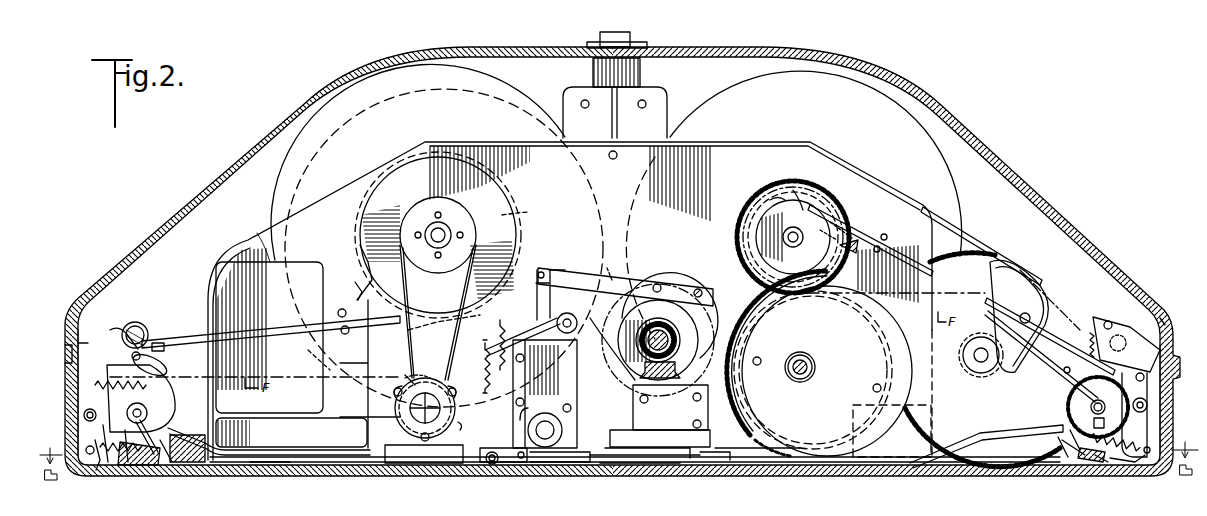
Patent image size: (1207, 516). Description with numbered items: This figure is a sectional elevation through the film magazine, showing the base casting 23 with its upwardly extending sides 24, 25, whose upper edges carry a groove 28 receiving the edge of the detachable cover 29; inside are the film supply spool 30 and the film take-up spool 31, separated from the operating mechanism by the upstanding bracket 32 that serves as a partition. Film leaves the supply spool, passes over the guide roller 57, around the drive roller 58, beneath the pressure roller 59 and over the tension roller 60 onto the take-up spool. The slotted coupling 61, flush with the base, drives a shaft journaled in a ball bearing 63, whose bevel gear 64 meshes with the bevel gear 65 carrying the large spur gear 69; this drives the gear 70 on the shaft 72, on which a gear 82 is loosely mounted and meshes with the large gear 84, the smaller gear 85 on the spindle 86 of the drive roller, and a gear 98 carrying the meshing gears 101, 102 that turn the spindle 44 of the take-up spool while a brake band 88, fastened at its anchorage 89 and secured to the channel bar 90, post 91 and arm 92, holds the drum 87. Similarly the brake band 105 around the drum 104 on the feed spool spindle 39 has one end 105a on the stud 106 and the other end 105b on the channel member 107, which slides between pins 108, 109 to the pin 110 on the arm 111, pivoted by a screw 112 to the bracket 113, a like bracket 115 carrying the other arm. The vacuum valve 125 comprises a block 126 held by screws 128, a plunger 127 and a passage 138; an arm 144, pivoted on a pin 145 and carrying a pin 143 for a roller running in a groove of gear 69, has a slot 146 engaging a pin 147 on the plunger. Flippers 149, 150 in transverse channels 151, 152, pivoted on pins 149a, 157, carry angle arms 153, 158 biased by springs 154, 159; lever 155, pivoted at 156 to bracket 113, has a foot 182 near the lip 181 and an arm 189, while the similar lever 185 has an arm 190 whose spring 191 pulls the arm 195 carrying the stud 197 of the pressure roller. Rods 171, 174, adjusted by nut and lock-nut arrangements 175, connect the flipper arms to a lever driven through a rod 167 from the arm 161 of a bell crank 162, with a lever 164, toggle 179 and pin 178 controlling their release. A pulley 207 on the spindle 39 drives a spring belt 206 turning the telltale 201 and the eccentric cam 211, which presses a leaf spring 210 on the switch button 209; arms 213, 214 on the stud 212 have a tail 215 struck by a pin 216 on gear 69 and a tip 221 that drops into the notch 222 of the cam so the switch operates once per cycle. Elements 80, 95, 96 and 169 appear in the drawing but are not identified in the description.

The base casting 23 is at (318, 465).
The side 24 is at (76, 395).
The side 25 is at (1162, 395).
The groove or slot 28 is at (66, 356).
The cover 29 is at (1015, 160).
The film supply spool 30 is at (507, 95).
The film take-up spool 31 is at (947, 178).
The bracket or support 32 is at (242, 236).
The feed spool spindle 39 is at (446, 232).
The spindle 44 is at (793, 237).
The guide roller 57 is at (172, 395).
The drive roller 58 is at (1072, 450).
The pressure roller 59 is at (1128, 326).
The tension roller 60 is at (1035, 300).
The slotted coupling 61 is at (672, 464).
The ball bearing 63 is at (668, 326).
The bevel gear 64 is at (655, 380).
The bevel gear 65 is at (849, 417).
The large spur gear 69 is at (672, 270).
The gear 70 is at (750, 300).
The shaft 72 is at (803, 352).
The disk 80 is at (853, 364).
The gear 82 is at (752, 440).
The large gear 84 is at (985, 265).
The smaller gear 85 is at (1016, 360).
The spindle 86 is at (1100, 398).
The drum 87 is at (793, 190).
The brake band 88 is at (830, 215).
The fastening point 89 is at (852, 256).
The channel-shaped bar 90 is at (917, 262).
The post 91 is at (1160, 350).
The arm 92 is at (1048, 372).
The pin 95 is at (888, 232).
The pin 96 is at (877, 253).
The gear 98 is at (848, 220).
The gear 101 is at (770, 200).
The gear 102 is at (743, 222).
The drum 104 is at (502, 198).
The brake band 105 is at (530, 208).
The end of brake band 105a is at (358, 256).
The end of brake band 105b is at (414, 334).
The stud 106 is at (354, 282).
The channel-shaped member 107 is at (240, 337).
The pin 108 is at (340, 310).
The pin 109 is at (322, 362).
The pin 110 is at (158, 360).
The arm 111 is at (133, 322).
The screw 112 is at (158, 344).
The bracket 113 is at (116, 330).
The bracket 115 is at (168, 468).
The valve 125 is at (530, 297).
The block 126 is at (565, 397).
The plunger 127 is at (536, 302).
The screws 128 is at (565, 410).
The passage 138 is at (553, 428).
The pin 143 is at (656, 282).
The arm 144 is at (612, 272).
The pin 145 is at (701, 288).
The slot 146 is at (564, 263).
The pin 147 is at (544, 270).
The flipper 149 is at (140, 468).
The pivot pin 149a is at (189, 453).
The flipper 150 is at (1100, 455).
The transverse channel 151 is at (270, 489).
The transverse channel 152 is at (1085, 464).
The angle arm 153 is at (152, 432).
The spring 154 is at (105, 470).
The lever 155 is at (85, 445).
The pivot 156 is at (82, 414).
The pivot pin 157 is at (1100, 466).
The angle arm 158 is at (1064, 460).
The spring 159 is at (1138, 465).
The arm 161 is at (615, 95).
The bell crank 162 is at (630, 465).
The lever 164 is at (572, 464).
The rod 167 is at (705, 466).
The rail 169 is at (720, 466).
The rod 171 is at (982, 446).
The rod 174 is at (238, 436).
The nut and lock nut arrangement 175 is at (127, 412).
The pin 178 is at (492, 466).
The toggle 179 is at (525, 464).
The bent-up lip 181 is at (128, 470).
The foot 182 is at (96, 470).
The lever 185 is at (1148, 418).
The arm 189 is at (72, 343).
The arm 190 is at (1160, 320).
The spring 191 is at (1088, 330).
The arm 195 is at (1109, 320).
The stud 197 is at (1126, 340).
The telltale 201 is at (420, 420).
The spring belt 206 is at (404, 286).
The pulley 207 is at (440, 205).
The actuating button 209 is at (432, 430).
The leaf spring 210 is at (462, 432).
The eccentric cam 211 is at (398, 398).
The stud 212 is at (568, 313).
The arm 213 is at (512, 330).
The arm 214 is at (486, 340).
The tail 215 is at (597, 378).
The pin 216 is at (660, 416).
The projection 221 is at (408, 378).
The notch 222 is at (425, 376).